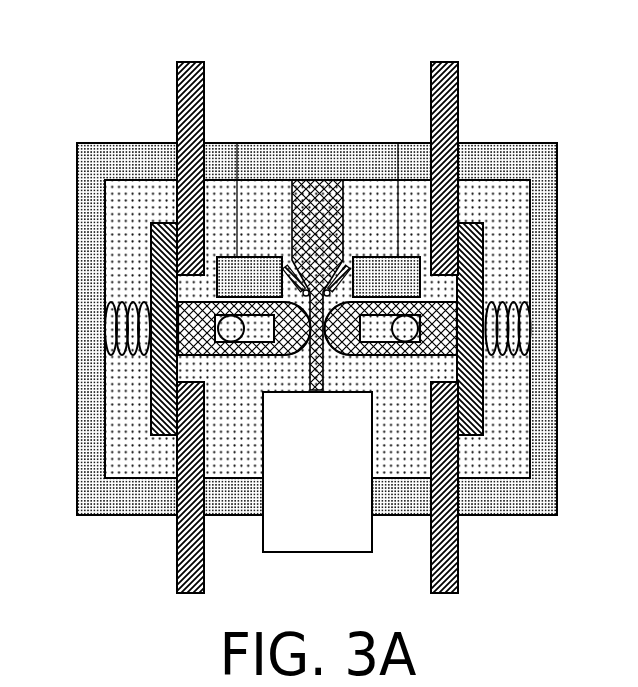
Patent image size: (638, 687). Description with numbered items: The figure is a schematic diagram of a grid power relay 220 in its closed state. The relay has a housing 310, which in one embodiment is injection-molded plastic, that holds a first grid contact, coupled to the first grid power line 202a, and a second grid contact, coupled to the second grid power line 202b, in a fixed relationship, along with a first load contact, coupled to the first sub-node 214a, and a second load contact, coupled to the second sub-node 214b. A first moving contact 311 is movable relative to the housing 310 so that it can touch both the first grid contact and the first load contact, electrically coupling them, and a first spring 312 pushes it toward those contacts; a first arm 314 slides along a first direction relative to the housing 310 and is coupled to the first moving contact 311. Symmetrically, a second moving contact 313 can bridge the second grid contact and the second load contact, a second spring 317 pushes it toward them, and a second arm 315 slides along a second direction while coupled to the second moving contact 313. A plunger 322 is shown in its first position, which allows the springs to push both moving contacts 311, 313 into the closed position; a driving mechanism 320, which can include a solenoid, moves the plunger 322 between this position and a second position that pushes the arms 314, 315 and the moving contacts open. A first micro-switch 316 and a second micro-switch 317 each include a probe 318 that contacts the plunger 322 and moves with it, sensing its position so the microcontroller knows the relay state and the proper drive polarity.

The grid power relay 220 is at (315, 326).
The housing 310 is at (142, 142).
The first moving contact 311 is at (150, 245).
The first spring 312 is at (113, 330).
The second moving contact 313 is at (484, 245).
The first arm 314 is at (252, 356).
The second arm 315 is at (385, 356).
The first micro-switch 316 is at (268, 257).
The second spring / second micro-switch 317 is at (366, 257).
The probe 318 is at (315, 219).
The driving mechanism 320 is at (299, 488).
The plunger 322 is at (317, 195).
The first grid power line 202a is at (190, 62).
The second grid power line 202b is at (443, 62).
The first sub-node 214a is at (190, 593).
The second sub-node 214b is at (444, 593).